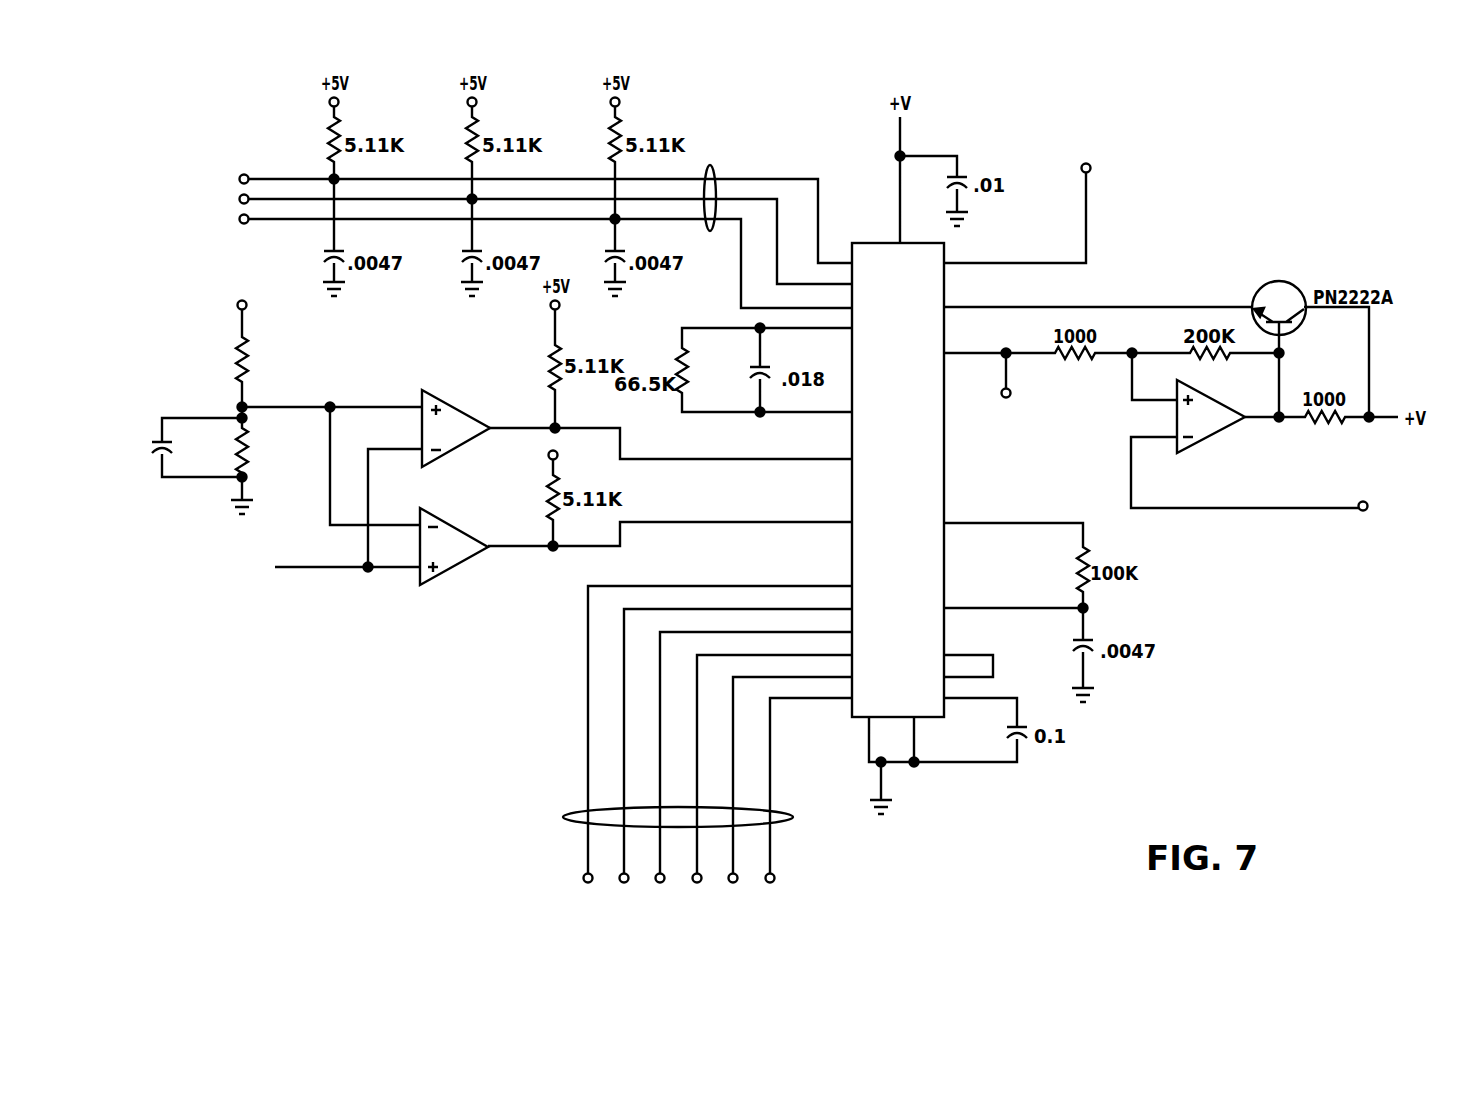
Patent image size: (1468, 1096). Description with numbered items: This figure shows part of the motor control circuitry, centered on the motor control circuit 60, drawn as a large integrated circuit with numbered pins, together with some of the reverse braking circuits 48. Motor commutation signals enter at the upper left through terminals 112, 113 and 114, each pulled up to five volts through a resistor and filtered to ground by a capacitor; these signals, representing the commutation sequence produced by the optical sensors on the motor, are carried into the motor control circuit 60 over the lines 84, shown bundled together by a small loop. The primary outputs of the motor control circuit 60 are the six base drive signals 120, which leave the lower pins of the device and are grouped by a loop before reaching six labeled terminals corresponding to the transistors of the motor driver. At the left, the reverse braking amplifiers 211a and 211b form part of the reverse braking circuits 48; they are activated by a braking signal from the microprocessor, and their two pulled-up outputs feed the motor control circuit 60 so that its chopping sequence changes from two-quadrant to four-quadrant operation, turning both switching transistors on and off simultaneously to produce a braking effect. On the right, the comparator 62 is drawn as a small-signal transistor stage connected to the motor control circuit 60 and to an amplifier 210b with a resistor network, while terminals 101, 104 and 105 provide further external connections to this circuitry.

The reverse braking circuits 48 is at (321, 485).
The motor control circuit 60 is at (934, 829).
The comparator 62 is at (1289, 279).
The lines 84 is at (716, 172).
The terminal 101 is at (1361, 511).
The terminal 104 is at (1011, 392).
The terminal 105 is at (1091, 166).
The terminal 112 is at (239, 221).
The terminal 113 is at (239, 198).
The terminal 114 is at (246, 173).
The base drive signals 120 is at (563, 813).
The operational amplifier 210b is at (1211, 416).
The reverse braking amplifier 211a is at (456, 428).
The reverse braking amplifier 211b is at (454, 546).